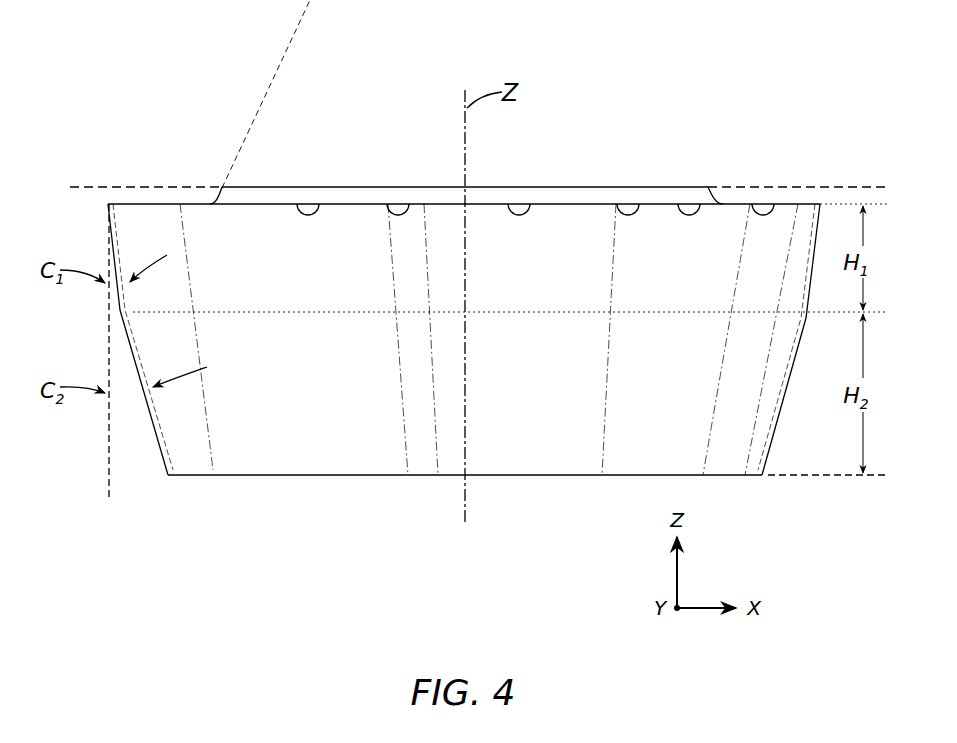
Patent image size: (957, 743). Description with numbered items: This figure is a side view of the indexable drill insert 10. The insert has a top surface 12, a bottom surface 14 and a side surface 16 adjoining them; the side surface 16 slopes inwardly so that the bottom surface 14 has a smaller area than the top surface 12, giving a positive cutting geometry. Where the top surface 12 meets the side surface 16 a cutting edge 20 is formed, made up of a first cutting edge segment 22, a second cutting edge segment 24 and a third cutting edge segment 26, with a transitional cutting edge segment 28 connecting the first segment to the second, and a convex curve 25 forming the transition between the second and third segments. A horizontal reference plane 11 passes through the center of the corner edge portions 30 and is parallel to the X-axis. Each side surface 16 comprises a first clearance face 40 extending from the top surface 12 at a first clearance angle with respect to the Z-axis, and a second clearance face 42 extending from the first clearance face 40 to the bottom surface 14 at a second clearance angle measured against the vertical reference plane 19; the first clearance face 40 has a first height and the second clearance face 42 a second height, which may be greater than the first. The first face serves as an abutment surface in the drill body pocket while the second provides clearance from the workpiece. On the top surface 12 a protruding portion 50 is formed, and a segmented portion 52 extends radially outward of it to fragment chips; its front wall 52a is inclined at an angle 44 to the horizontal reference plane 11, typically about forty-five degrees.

The indexable drill insert 10 is at (113, 123).
The horizontal reference plane 11 is at (837, 178).
The top surface 12 is at (732, 176).
The bottom surface 14 is at (420, 481).
The side surface 16 is at (529, 319).
The vertical reference plane 19 is at (110, 462).
The cutting edge 20 is at (566, 197).
The first cutting edge segment 22 is at (303, 212).
The second cutting edge segment 24 is at (528, 209).
The convex curve 25 is at (638, 213).
The third cutting edge segment 26 is at (697, 213).
The transitional cutting edge segment 28 is at (405, 213).
The corner edge portion 30 is at (770, 213).
The first clearance face 40 is at (362, 230).
The second clearance face 42 is at (247, 447).
The angle 44 is at (378, 184).
The protruding portion 50 is at (661, 182).
The segmented portion 52 is at (203, 193).
The front wall 52a is at (212, 196).